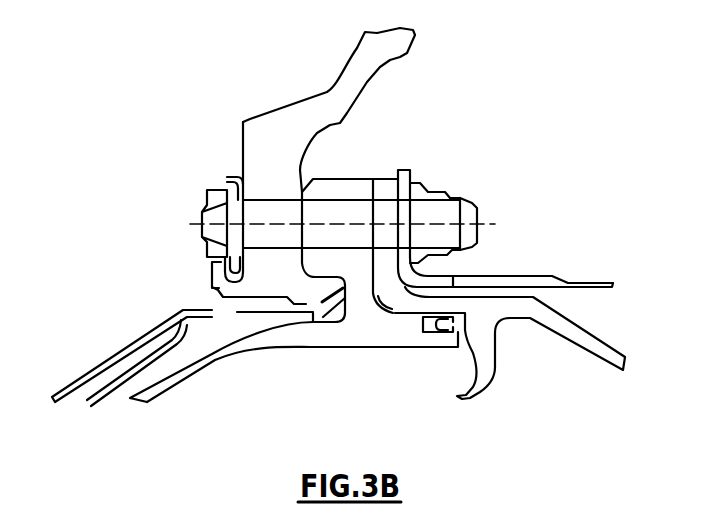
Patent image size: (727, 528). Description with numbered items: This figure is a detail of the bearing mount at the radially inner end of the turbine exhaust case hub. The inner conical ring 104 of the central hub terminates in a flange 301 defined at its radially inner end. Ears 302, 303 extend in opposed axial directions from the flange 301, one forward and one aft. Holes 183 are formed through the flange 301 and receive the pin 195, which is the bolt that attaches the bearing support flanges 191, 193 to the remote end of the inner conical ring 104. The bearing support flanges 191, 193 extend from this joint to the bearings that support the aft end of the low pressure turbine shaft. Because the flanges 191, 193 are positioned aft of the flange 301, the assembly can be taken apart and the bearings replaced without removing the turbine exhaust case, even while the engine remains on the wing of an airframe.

The inner conical ring 104 is at (267, 133).
The flange 301 is at (257, 170).
The holes 183 is at (258, 202).
The ear 302 is at (212, 290).
The ear 303 is at (318, 292).
The bearing support flange 191 is at (337, 185).
The bearing support flange 193 is at (393, 288).
The bolt 195 is at (468, 208).